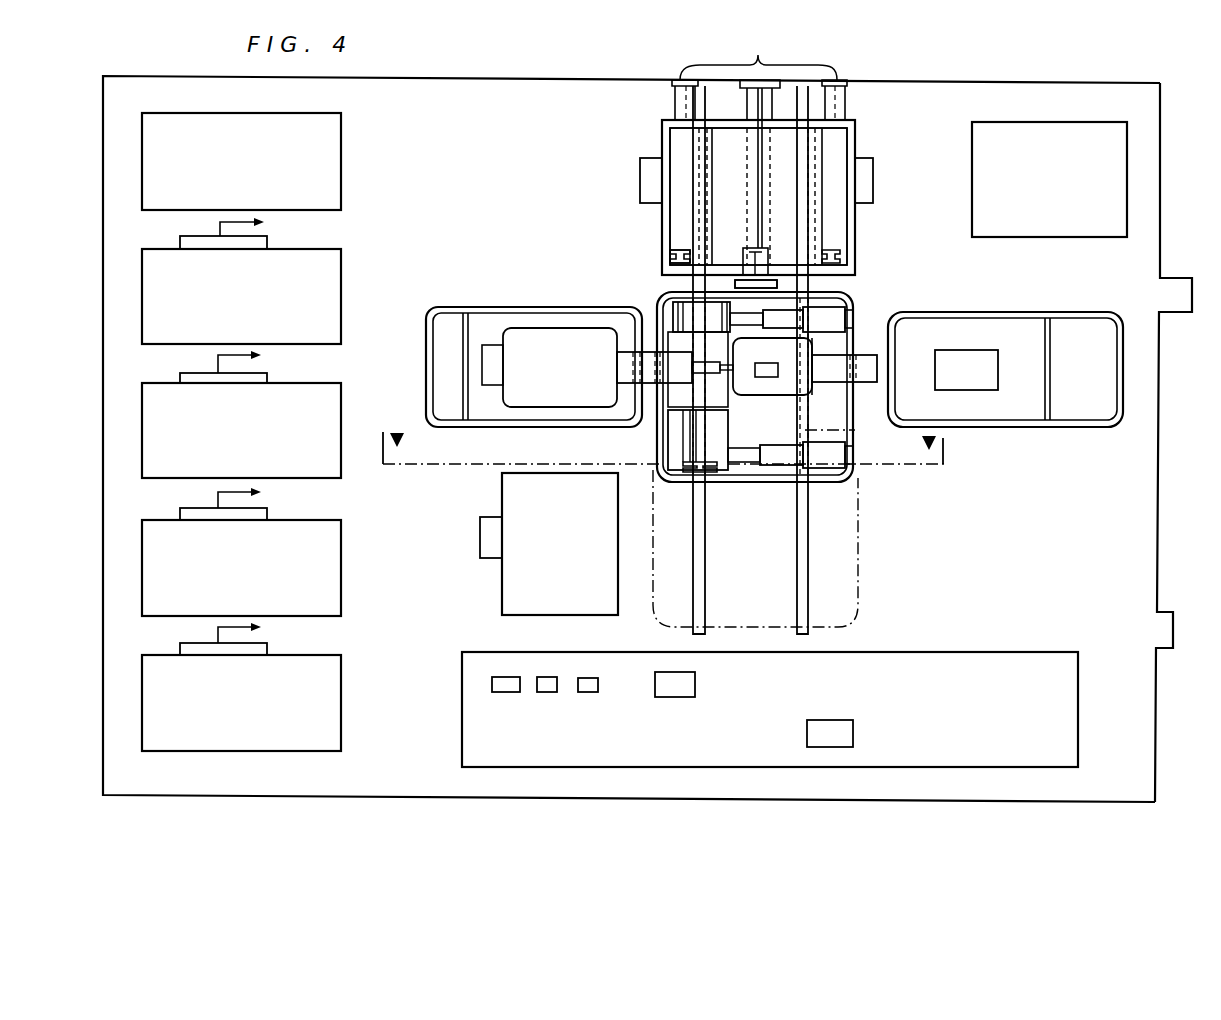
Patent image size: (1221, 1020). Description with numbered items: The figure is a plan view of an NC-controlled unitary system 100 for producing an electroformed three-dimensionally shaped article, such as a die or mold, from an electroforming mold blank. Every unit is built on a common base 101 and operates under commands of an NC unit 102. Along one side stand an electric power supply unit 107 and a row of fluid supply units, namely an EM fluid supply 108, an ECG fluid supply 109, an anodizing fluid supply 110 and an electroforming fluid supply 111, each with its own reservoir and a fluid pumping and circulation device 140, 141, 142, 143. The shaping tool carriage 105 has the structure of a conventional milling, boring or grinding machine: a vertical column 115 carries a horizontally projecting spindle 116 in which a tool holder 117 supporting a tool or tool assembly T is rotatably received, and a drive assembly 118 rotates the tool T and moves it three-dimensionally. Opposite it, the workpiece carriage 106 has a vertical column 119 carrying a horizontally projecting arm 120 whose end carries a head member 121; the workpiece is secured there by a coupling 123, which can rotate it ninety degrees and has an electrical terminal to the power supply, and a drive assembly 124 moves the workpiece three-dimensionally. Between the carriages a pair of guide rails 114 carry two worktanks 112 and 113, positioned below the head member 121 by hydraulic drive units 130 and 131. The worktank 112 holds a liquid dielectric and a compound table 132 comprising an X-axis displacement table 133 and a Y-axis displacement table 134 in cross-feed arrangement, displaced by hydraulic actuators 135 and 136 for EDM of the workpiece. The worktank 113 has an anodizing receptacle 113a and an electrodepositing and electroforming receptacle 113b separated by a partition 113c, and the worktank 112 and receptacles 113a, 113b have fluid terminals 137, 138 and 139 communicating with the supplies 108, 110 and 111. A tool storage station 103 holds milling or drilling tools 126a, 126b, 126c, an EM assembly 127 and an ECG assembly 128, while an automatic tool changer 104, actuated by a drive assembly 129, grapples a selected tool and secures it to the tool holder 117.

The unitary system 100 is at (1218, 212).
The common base 101 is at (1155, 548).
The NC unit 102 is at (1045, 129).
The tool storage station 103 is at (867, 650).
The automatic tool changer (ATC) 104 is at (502, 585).
The shaping tool carriage 105 is at (528, 303).
The workpiece carriage 106 is at (922, 312).
The electric power supply unit 107 is at (341, 170).
The EM fluid supply 108 is at (341, 302).
The ECG fluid supply 109 is at (341, 393).
The anodizing fluid supply 110 is at (341, 560).
The electroforming fluid supply 111 is at (341, 708).
The worktank 112 is at (775, 510).
The worktank 113 is at (662, 135).
The receptacle 113a is at (730, 147).
The receptacle 113b is at (878, 212).
The partition 113c is at (762, 168).
The guide rails 114 is at (716, 589).
The vertical column 115 is at (522, 398).
The spindle 116 is at (683, 332).
The tool holder 117 is at (680, 398).
The drive assembly 118 is at (483, 355).
The vertical column 119 is at (1030, 403).
The horizontally projecting arm 120 is at (855, 338).
The head member 121 is at (790, 388).
The coupling 123 is at (767, 378).
The drive assembly 124 is at (985, 390).
The milling or drilling tool 126a is at (508, 677).
The milling or drilling tool 126b is at (548, 677).
The milling or drilling tool 126c is at (580, 692).
The EM assembly 127 is at (658, 697).
The ECG assembly 128 is at (853, 740).
The drive assembly 129 is at (488, 517).
The drive unit 130 is at (735, 258).
The drive unit 131 is at (758, 55).
The compound table 132 is at (672, 470).
The X-axis displacement table 133 is at (735, 284).
The Y-axis displacement table 134 is at (700, 312).
The hydraulic actuator 135 is at (770, 260).
The hydraulic actuator 136 is at (725, 472).
The fluid terminal 137 is at (845, 293).
The fluid terminal 138 is at (645, 185).
The fluid terminal 139 is at (873, 178).
The fluid pumping and circulation device 140 is at (267, 240).
The fluid pumping and circulation device 141 is at (267, 371).
The fluid pumping and circulation device 142 is at (267, 507).
The fluid pumping and circulation device 143 is at (267, 643).
The tool or tool assembly T is at (723, 374).